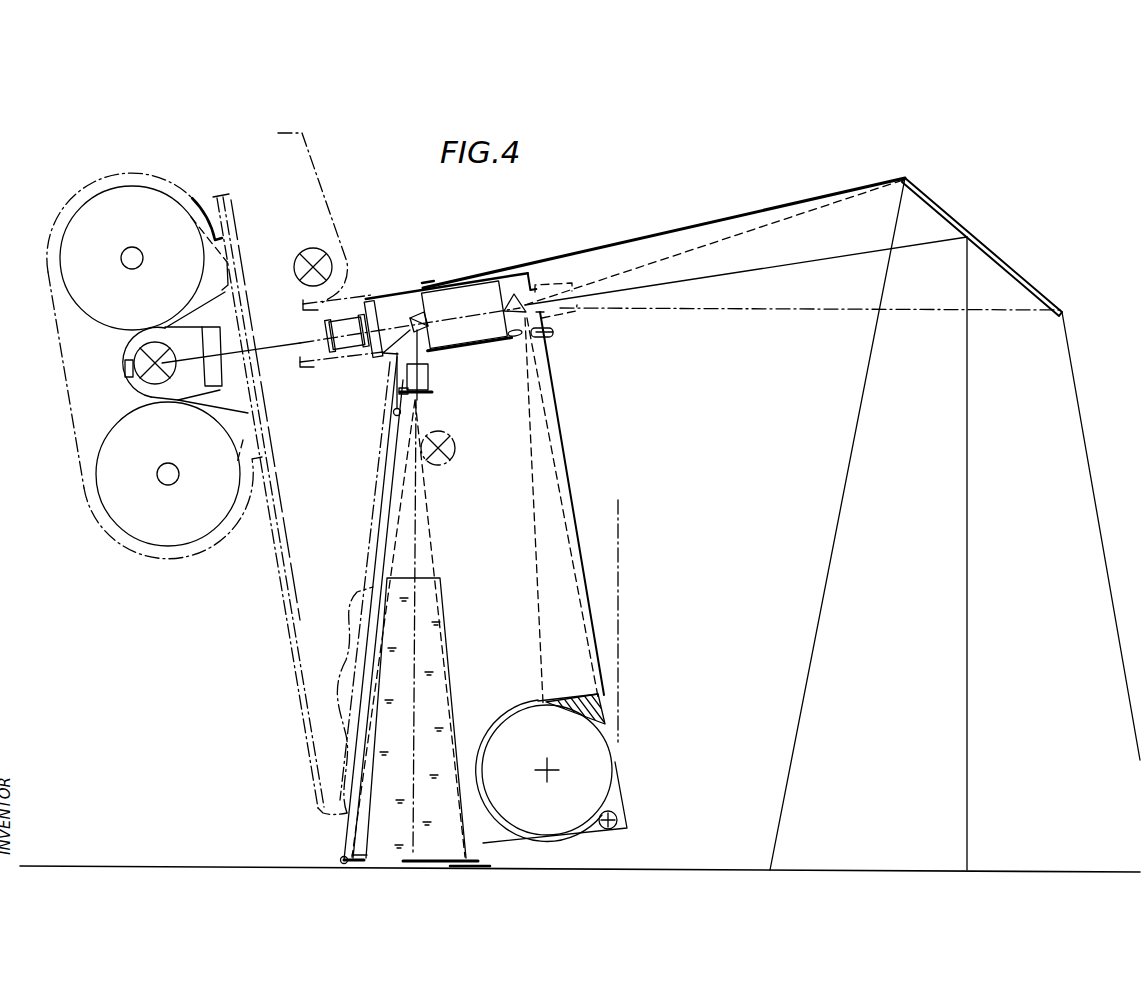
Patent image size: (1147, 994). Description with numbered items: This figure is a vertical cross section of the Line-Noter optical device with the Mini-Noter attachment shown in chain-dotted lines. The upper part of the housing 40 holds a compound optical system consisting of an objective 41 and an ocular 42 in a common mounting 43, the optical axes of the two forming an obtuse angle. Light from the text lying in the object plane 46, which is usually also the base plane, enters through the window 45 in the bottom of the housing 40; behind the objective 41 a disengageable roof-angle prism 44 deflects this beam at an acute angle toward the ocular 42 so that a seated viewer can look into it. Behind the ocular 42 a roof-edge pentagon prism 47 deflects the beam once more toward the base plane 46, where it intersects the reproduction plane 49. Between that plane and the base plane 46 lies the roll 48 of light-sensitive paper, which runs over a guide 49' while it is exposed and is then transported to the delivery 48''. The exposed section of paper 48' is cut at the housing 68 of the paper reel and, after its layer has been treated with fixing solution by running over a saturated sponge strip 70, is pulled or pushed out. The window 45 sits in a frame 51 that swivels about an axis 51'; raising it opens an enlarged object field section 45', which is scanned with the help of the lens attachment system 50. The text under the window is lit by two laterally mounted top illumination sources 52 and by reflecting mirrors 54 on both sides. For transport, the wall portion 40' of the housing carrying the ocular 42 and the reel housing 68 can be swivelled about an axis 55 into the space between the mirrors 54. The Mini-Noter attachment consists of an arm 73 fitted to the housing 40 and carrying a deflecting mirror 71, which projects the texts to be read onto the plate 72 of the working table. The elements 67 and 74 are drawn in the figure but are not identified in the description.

The housing 40 is at (406, 608).
The wall portion of the housing 40' is at (573, 503).
The objective 41 is at (429, 376).
The ocular 42 is at (470, 334).
The common mounting 43 is at (514, 338).
The roof-angle prism 44 is at (413, 318).
The window 45 is at (365, 851).
The object field section 45' is at (440, 844).
The object plane (base plane) 46 is at (389, 868).
The pentagon prism 47 is at (516, 296).
The roll of light-sensitive paper 48 is at (547, 770).
The exposed section of light-sensitive paper 48' is at (645, 621).
The delivery 48'' is at (578, 793).
The reproduction plane (image plane) 49 is at (575, 687).
The guide 49' is at (609, 704).
The lens attachment system 50 is at (399, 392).
The frame 51 is at (466, 847).
The axis 51' is at (320, 851).
The top illumination source 52 is at (456, 449).
The reflecting mirror 54 is at (433, 613).
The axis 55 is at (393, 414).
The tangent plate 67 is at (541, 700).
The housing of the paper reel 68 is at (490, 726).
The saturated sponge strip 70 is at (620, 821).
The deflecting mirror 71 is at (1006, 265).
The plate of the working table 72 is at (995, 870).
The arm 73 is at (742, 212).
The clip 74 is at (554, 337).